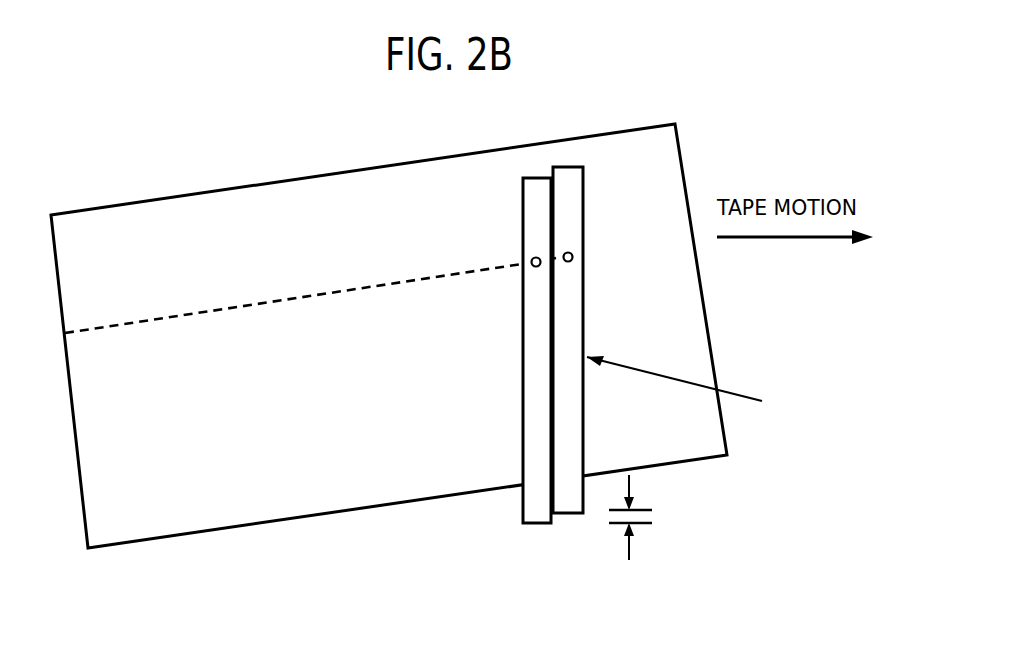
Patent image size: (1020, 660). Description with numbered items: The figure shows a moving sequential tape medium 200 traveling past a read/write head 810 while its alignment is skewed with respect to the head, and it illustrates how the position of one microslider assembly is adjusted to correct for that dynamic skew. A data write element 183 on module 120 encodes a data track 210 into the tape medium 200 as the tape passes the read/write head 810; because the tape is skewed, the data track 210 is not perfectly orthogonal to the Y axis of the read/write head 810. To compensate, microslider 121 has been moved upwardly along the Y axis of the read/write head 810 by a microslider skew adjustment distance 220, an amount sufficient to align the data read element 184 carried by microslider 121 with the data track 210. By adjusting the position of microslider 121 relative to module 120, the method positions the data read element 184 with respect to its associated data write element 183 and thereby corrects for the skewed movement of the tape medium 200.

The tape medium 200 is at (389, 336).
The data track 210 is at (235, 310).
The module 120 is at (532, 502).
The microslider 121 is at (573, 503).
The data write element 183 is at (533, 259).
The data read element 184 is at (571, 254).
The read/write head 810 is at (692, 384).
The microslider skew adjustment distance 220 is at (648, 517).